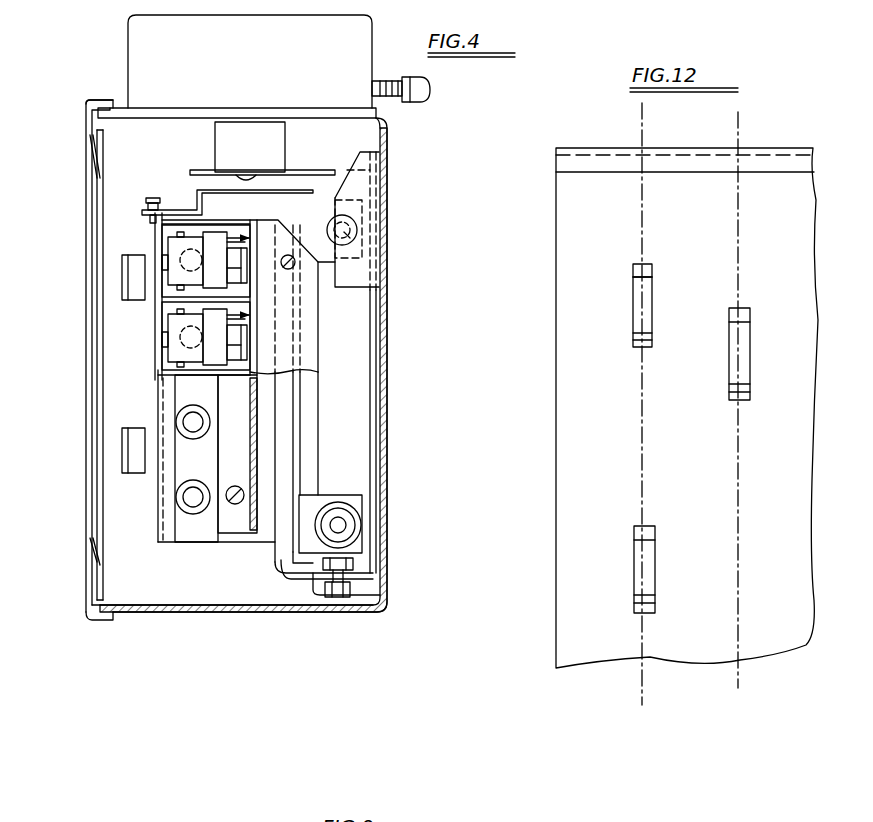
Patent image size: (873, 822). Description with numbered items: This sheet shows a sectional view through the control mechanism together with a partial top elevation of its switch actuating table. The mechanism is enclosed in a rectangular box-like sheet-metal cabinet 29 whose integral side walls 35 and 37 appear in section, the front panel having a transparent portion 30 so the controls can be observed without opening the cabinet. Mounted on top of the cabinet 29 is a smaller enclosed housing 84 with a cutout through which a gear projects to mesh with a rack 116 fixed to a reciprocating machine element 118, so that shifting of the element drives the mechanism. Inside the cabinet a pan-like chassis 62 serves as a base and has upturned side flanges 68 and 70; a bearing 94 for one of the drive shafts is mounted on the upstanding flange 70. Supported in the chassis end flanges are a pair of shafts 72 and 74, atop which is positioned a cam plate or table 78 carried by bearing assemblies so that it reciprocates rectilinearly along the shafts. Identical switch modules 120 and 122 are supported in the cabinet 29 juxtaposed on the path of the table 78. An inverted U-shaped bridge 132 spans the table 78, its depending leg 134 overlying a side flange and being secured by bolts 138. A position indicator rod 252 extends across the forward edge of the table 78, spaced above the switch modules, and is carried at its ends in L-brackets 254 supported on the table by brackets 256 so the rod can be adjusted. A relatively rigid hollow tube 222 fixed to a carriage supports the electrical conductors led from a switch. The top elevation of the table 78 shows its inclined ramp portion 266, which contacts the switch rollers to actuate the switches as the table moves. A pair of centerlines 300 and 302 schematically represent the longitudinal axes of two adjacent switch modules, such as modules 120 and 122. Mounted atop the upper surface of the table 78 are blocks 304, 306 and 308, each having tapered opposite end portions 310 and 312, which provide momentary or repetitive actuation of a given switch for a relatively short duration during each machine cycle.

In FIG. 4, the enclosed housing 84 is at (268, 70).
In FIG. 4, the side wall 37 is at (127, 104).
In FIG. 4, the bearing 94 is at (215, 143).
In FIG. 4, the bracket 256 is at (200, 180).
In FIG. 4, the L-bracket 254 is at (178, 208).
In FIG. 4, the side flange 70 is at (318, 173).
In FIG. 4, the rack 116 is at (389, 81).
In FIG. 4, the reciprocating machine element 118 is at (408, 104).
In FIG. 4, the switch module 120 is at (165, 243).
In FIG. 4, the switch module 122 is at (165, 320).
In FIG. 4, the position indicator rod 252 is at (158, 360).
In FIG. 4, the shaft 74 is at (372, 240).
In FIG. 4, the hollow tube 222 is at (178, 420).
In FIG. 4, the transparent portion 30 is at (99, 426).
In FIG. 4, the chassis 62 is at (369, 416).
In FIG. 4, the cabinet 29 is at (389, 409).
In FIG. 4, the cam plate or table 78 is at (300, 471).
In FIG. 12, the cam plate or table 78 is at (561, 479).
In FIG. 4, the shaft 72 is at (340, 526).
In FIG. 4, the bridge 132 is at (276, 570).
In FIG. 4, the depending leg 134 is at (287, 580).
In FIG. 4, the side wall 35 is at (206, 613).
In FIG. 4, the side flange 68 is at (318, 570).
In FIG. 4, the bolt 138 is at (362, 600).
In FIG. 12, the centerline 300 is at (640, 126).
In FIG. 12, the centerline 302 is at (736, 128).
In FIG. 12, the inclined ramp portion 266 is at (557, 163).
In FIG. 12, the tapered end portion 310 is at (648, 270).
In FIG. 12, the block 304 is at (636, 313).
In FIG. 12, the tapered end portion 312 is at (638, 343).
In FIG. 12, the block 308 is at (750, 370).
In FIG. 12, the block 306 is at (645, 578).